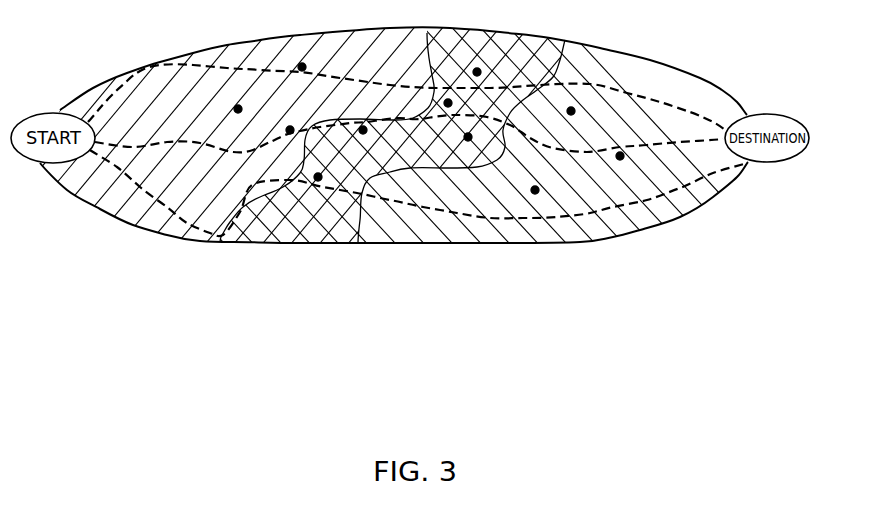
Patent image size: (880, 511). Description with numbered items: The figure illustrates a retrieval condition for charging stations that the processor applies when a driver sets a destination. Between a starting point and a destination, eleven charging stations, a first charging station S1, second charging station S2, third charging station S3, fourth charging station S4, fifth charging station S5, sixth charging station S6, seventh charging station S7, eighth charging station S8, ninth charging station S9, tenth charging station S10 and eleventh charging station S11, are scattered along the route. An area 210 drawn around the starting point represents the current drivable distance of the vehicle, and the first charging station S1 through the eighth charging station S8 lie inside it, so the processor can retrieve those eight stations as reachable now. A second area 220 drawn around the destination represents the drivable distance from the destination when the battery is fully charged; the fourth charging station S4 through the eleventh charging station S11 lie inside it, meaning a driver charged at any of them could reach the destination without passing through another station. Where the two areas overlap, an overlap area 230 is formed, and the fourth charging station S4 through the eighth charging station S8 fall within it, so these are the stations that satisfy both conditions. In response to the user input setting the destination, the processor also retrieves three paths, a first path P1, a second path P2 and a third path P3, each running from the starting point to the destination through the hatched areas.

The area representing the current drivable distance 210 is at (150, 215).
The area representing the drivable distance from the destination 220 is at (483, 225).
The overlap area 230 is at (295, 220).
The first path P1 is at (693, 112).
The second path P2 is at (677, 143).
The third path P3 is at (723, 178).
The first charging station S1 is at (224, 110).
The second charging station S2 is at (302, 56).
The third charging station S3 is at (280, 122).
The fourth charging station S4 is at (326, 168).
The fifth charging station S5 is at (372, 143).
The sixth charging station S6 is at (478, 61).
The seventh charging station S7 is at (440, 96).
The eighth charging station S8 is at (470, 148).
The ninth charging station S9 is at (523, 191).
The tenth charging station S10 is at (590, 118).
The eleventh charging station S11 is at (621, 168).